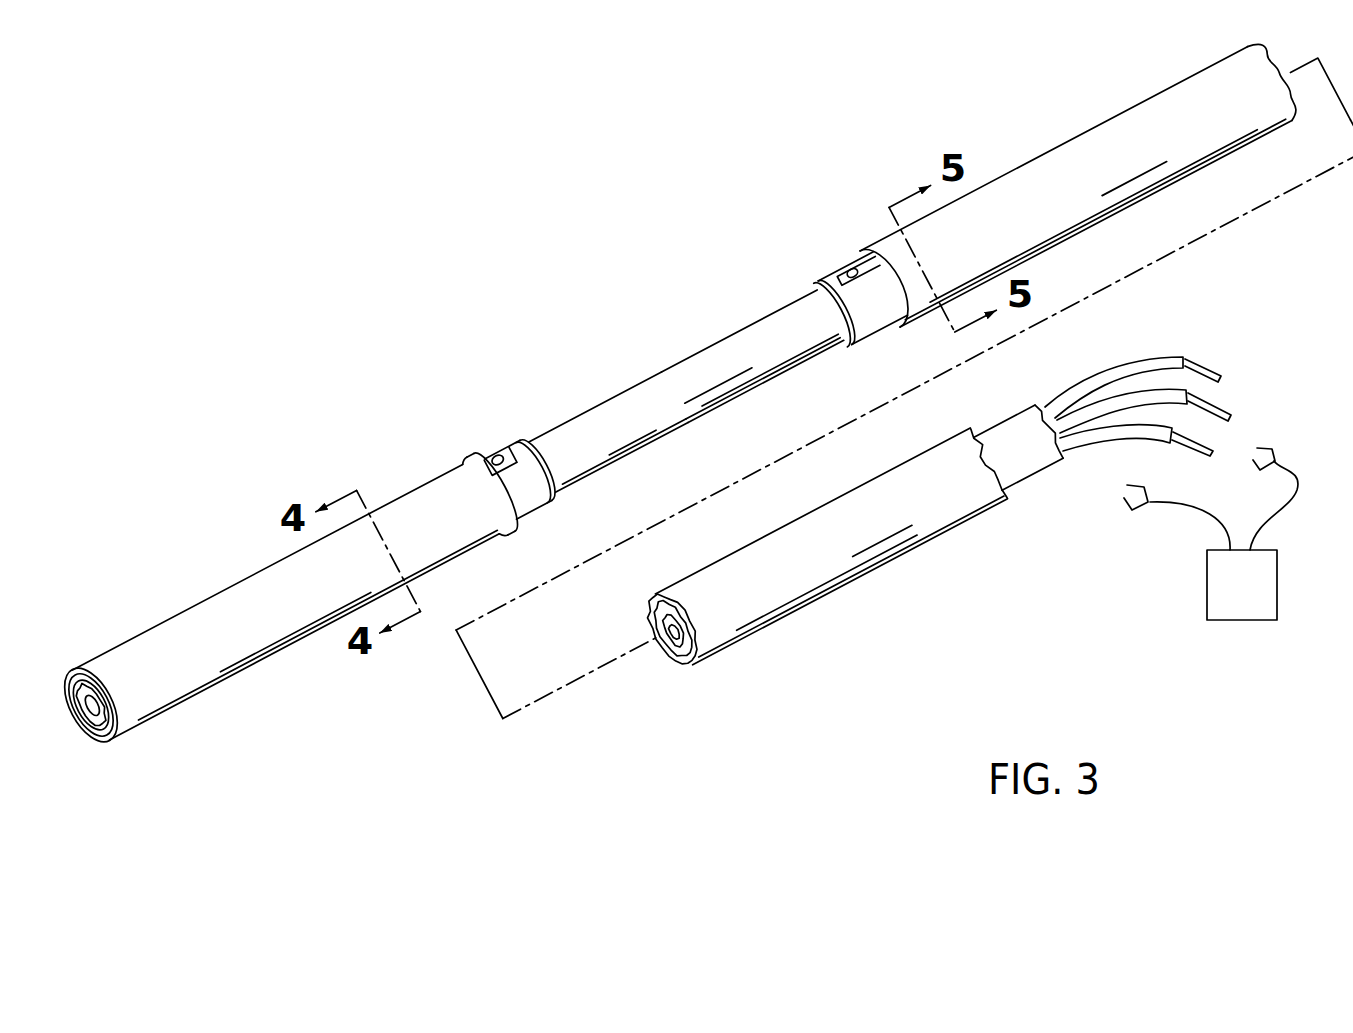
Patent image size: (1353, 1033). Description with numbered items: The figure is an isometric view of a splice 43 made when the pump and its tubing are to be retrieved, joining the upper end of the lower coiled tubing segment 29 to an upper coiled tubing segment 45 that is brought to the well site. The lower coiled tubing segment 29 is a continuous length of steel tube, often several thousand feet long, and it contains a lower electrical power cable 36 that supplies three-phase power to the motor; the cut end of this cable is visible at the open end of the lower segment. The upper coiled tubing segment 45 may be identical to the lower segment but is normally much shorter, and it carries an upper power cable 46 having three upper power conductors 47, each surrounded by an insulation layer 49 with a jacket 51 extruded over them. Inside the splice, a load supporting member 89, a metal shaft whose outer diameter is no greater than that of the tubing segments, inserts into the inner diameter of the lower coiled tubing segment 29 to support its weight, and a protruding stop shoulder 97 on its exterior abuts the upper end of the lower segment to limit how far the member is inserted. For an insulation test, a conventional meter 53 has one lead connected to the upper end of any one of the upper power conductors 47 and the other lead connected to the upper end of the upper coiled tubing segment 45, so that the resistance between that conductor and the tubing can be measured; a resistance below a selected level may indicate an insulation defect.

The lower coiled tubing segment 29 is at (212, 618).
The lower electrical power cable 36 is at (98, 744).
The stop shoulder 97 is at (483, 462).
The load supporting member 89 is at (576, 434).
The splice 43 is at (668, 363).
The upper coiled tubing segment 45 is at (1107, 150).
The upper power cable 46 is at (683, 666).
The jacket 51 is at (1030, 472).
The insulation layer 49 is at (1173, 350).
The upper power conductors 47 is at (1232, 412).
The meter 53 is at (1207, 600).